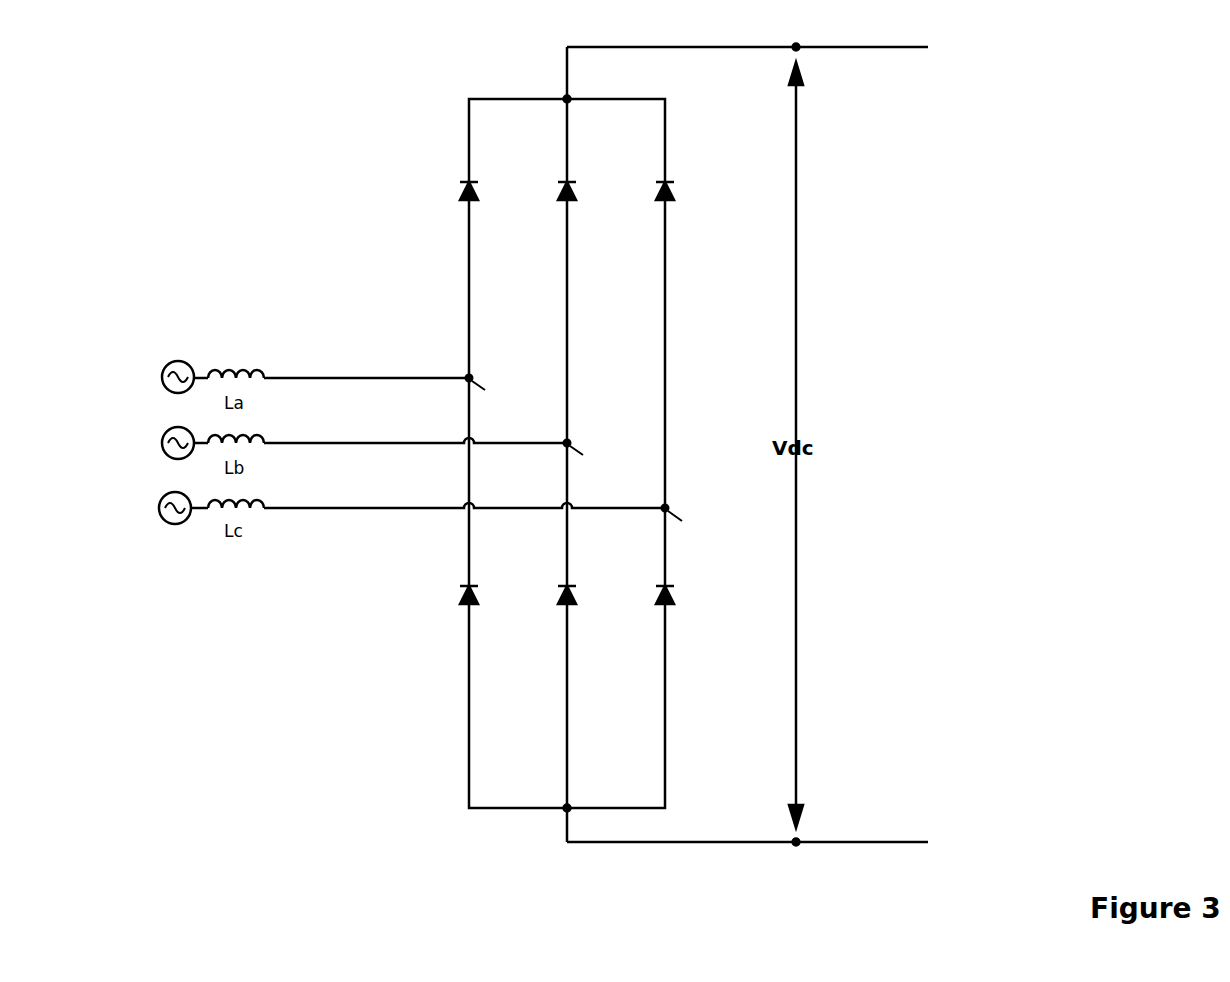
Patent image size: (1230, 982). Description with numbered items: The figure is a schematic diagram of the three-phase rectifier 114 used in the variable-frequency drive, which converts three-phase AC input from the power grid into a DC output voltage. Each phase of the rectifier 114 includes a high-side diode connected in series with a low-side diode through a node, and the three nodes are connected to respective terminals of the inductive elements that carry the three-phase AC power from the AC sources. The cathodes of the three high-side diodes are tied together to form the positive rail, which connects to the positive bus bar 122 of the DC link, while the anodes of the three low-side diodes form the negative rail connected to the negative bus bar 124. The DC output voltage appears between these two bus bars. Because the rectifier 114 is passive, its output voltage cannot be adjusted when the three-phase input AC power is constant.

The three-phase rectifier 114 is at (438, 38).
The positive bus bar 122 is at (831, 45).
The negative bus bar 124 is at (828, 840).